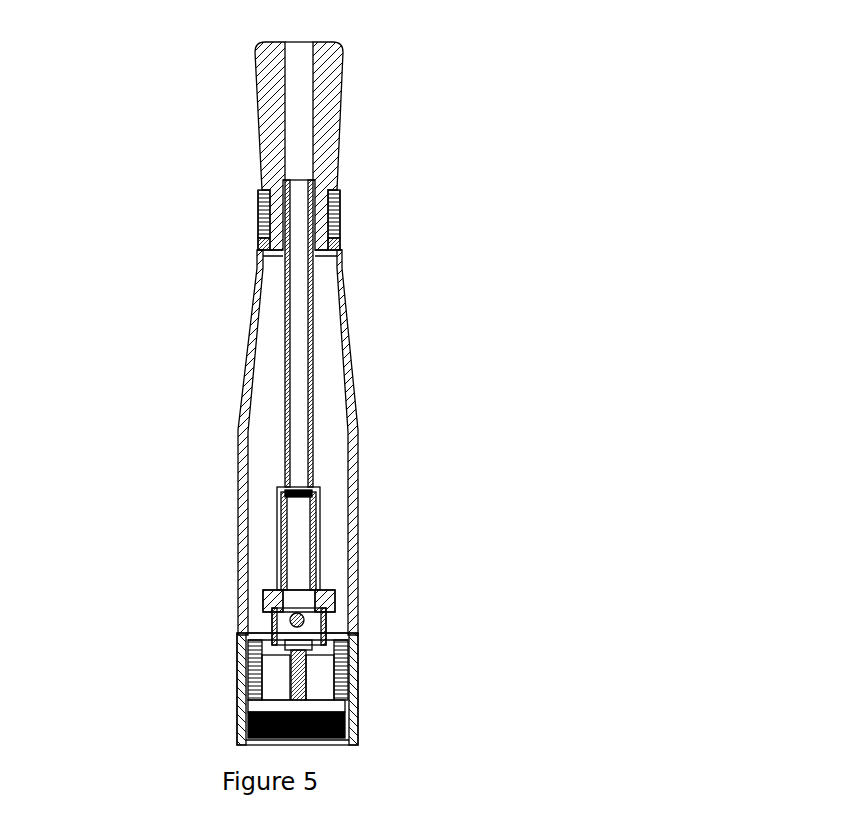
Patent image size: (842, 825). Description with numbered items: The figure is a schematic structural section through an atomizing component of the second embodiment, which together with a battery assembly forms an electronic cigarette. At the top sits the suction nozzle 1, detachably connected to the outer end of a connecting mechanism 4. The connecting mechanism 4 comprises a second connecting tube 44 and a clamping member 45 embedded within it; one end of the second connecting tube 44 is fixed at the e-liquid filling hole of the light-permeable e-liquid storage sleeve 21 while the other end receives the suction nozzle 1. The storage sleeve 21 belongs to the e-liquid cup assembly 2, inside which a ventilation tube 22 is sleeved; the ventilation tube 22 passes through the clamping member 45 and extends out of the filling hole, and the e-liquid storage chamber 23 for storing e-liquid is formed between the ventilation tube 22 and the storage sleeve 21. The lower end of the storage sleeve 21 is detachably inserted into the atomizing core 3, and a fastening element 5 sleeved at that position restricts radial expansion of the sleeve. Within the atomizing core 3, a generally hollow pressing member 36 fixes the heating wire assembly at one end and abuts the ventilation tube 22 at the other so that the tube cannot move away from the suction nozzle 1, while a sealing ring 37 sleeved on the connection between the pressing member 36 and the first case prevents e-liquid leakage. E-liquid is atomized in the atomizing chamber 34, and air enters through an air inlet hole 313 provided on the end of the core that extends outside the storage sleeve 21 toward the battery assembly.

The suction nozzle 1 is at (265, 101).
The e-liquid cup assembly 2 is at (205, 407).
The e-liquid storage sleeve 21 is at (251, 323).
The ventilation tube 22 is at (288, 370).
The e-liquid storage chamber 23 is at (239, 441).
The atomizing core 3 is at (237, 720).
The air inlet hole 313 is at (353, 706).
The atomizing chamber 34 is at (272, 620).
The pressing member 36 is at (322, 575).
The sealing ring 37 is at (332, 603).
The connecting mechanism 4 is at (394, 219).
The second connecting tube 44 is at (340, 200).
The clamping member 45 is at (340, 240).
The fastening element 5 is at (242, 685).